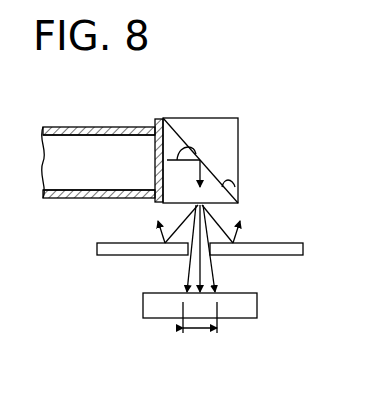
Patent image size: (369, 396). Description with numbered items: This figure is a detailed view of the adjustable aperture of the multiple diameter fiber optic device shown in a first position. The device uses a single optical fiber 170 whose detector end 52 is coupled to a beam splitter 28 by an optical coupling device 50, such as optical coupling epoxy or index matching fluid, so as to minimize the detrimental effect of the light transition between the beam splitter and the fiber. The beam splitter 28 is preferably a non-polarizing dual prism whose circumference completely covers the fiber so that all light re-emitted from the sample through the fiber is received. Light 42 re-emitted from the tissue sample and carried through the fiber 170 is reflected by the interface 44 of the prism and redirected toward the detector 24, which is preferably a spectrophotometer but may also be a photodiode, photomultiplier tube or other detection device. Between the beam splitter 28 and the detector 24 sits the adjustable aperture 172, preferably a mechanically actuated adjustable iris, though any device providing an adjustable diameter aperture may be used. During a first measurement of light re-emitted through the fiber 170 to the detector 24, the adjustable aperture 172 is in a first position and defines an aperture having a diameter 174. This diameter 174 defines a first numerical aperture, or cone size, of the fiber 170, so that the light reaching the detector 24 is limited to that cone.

The optical fiber 170 is at (62, 145).
The optical coupling device 50 is at (158, 127).
The detector end 52 is at (70, 183).
The beam splitter 28 is at (212, 128).
The light 42 is at (188, 147).
The interface 44 is at (235, 187).
The adjustable aperture 172 is at (115, 256).
The detector 24 is at (248, 305).
The diameter 174 is at (196, 333).